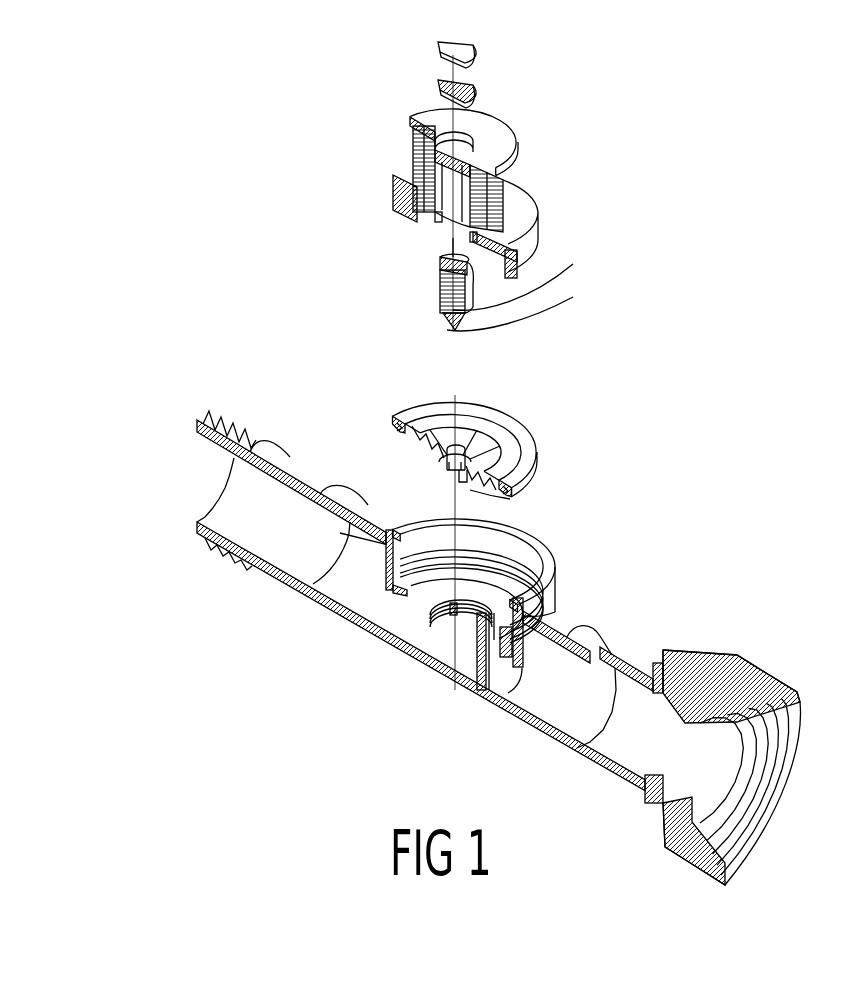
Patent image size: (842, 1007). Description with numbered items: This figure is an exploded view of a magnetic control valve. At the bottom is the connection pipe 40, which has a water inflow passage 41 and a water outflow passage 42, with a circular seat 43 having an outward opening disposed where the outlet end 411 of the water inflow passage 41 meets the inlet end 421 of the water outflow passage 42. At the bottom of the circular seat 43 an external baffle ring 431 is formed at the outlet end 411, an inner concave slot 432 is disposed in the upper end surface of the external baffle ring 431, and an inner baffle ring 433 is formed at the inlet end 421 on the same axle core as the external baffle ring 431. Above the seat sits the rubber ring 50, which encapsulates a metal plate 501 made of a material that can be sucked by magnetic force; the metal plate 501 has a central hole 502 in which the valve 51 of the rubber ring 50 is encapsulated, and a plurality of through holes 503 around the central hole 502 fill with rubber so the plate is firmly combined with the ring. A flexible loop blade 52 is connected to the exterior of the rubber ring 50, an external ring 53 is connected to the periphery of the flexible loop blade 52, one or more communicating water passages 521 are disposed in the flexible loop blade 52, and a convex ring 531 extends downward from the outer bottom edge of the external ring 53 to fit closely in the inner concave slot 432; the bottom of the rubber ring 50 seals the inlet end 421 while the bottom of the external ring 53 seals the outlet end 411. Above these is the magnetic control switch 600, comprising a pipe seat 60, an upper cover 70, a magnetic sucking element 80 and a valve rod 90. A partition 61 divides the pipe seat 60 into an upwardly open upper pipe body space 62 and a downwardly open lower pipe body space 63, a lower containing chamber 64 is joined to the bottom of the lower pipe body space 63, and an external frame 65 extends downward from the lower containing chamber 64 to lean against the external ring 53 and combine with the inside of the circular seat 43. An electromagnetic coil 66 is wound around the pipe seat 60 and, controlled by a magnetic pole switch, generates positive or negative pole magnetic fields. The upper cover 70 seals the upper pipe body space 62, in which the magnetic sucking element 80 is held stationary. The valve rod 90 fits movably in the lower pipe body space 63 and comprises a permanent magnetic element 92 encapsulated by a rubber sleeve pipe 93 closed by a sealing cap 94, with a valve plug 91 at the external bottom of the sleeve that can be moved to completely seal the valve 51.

The connection pipe 40 is at (456, 648).
The water inflow passage 41 is at (647, 720).
The water outflow passage 42 is at (297, 543).
The circular seat 43 is at (507, 639).
The outlet end 411 is at (538, 622).
The inlet end 421 is at (450, 617).
The external baffle ring 431 is at (510, 580).
The inner concave slot 432 is at (380, 623).
The inner baffle ring 433 is at (448, 630).
The rubber ring 50 is at (485, 399).
The valve 51 is at (480, 448).
The flexible loop blade 52 is at (430, 410).
The external ring 53 is at (527, 457).
The metal plate 501 is at (437, 463).
The central hole 502 is at (452, 477).
The through holes 503 is at (437, 457).
The communicating water passages 521 is at (420, 410).
The convex ring 531 is at (530, 497).
The pipe seat 60 is at (484, 164).
The partition 61 is at (412, 170).
The upper pipe body space 62 is at (450, 137).
The lower pipe body space 63 is at (507, 185).
The lower containing chamber 64 is at (413, 223).
The external frame 65 is at (513, 228).
The electromagnetic coil 66 is at (458, 196).
The magnetic control switch 600 is at (288, 410).
The upper cover 70 is at (468, 48).
The magnetic sucking element 80 is at (470, 93).
The valve rod 90 is at (484, 277).
The valve plug 91 is at (525, 302).
The magnetic element 92 is at (443, 290).
The rubber sleeve pipe 93 is at (560, 275).
The sealing cap 94 is at (462, 262).